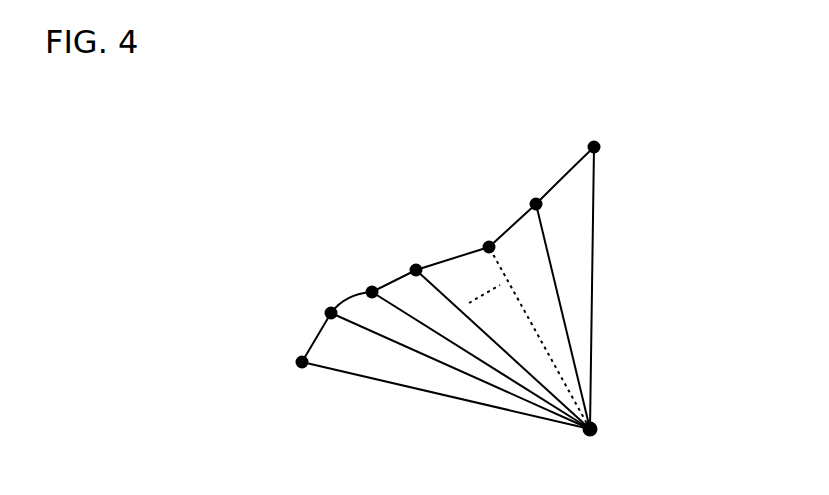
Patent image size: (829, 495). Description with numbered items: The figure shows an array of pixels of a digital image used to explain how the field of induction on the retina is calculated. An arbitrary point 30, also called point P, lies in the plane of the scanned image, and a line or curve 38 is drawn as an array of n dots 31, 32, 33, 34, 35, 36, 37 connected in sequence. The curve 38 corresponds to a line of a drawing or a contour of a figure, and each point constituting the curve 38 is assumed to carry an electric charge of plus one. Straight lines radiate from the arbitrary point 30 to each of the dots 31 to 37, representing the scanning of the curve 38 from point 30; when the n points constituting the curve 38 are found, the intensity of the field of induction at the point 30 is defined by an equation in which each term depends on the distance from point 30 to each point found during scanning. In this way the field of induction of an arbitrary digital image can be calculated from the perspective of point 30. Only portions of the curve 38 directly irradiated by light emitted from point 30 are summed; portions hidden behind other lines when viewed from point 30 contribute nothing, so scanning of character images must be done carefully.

The arbitrary point 30 is at (595, 433).
The dot 31 is at (300, 361).
The dot 32 is at (331, 313).
The dot 33 is at (372, 292).
The dot 34 is at (416, 270).
The dot 35 is at (489, 246).
The dot 36 is at (535, 203).
The dot 37 is at (594, 147).
The curve 38 is at (568, 172).